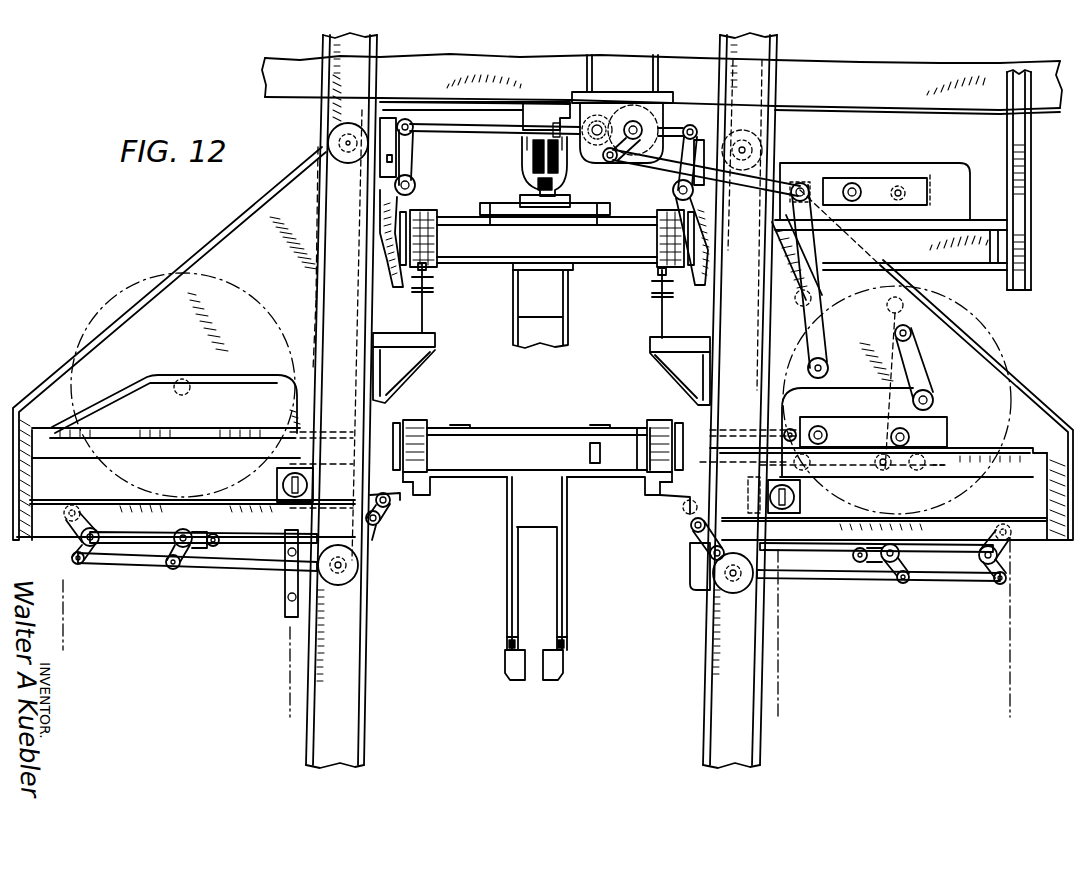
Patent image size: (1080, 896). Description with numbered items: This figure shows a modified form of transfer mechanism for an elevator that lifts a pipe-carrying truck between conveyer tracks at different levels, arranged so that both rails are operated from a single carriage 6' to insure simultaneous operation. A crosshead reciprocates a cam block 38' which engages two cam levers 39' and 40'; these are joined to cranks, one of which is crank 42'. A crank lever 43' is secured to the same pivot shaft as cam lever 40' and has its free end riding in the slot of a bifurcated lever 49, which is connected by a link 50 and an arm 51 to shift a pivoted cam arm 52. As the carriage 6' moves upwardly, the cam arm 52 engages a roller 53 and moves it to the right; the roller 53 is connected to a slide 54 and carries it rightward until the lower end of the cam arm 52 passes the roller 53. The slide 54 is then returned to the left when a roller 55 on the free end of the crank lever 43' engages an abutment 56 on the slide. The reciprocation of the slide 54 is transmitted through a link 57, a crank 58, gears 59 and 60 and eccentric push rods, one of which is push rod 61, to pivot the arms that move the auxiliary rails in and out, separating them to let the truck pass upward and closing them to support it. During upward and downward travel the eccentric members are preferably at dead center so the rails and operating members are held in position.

The carriage 6' is at (936, 365).
The cam block 38' is at (873, 421).
The cam lever 39' is at (799, 417).
The cam lever 40' is at (958, 444).
The crank 42' is at (898, 477).
The crank lever 43' is at (884, 437).
The bifurcated lever 49 is at (921, 360).
The link 50 is at (868, 310).
The arm 51 is at (800, 328).
The cam arm 52 is at (800, 275).
The roller 53 is at (803, 185).
The slide 54 is at (860, 185).
The roller 55 is at (933, 403).
The abutment 56 is at (890, 185).
The link 57 is at (670, 166).
The crank 58 is at (612, 162).
The gear 59 is at (655, 112).
The gear 60 is at (600, 122).
The eccentric push rod 61 is at (492, 130).